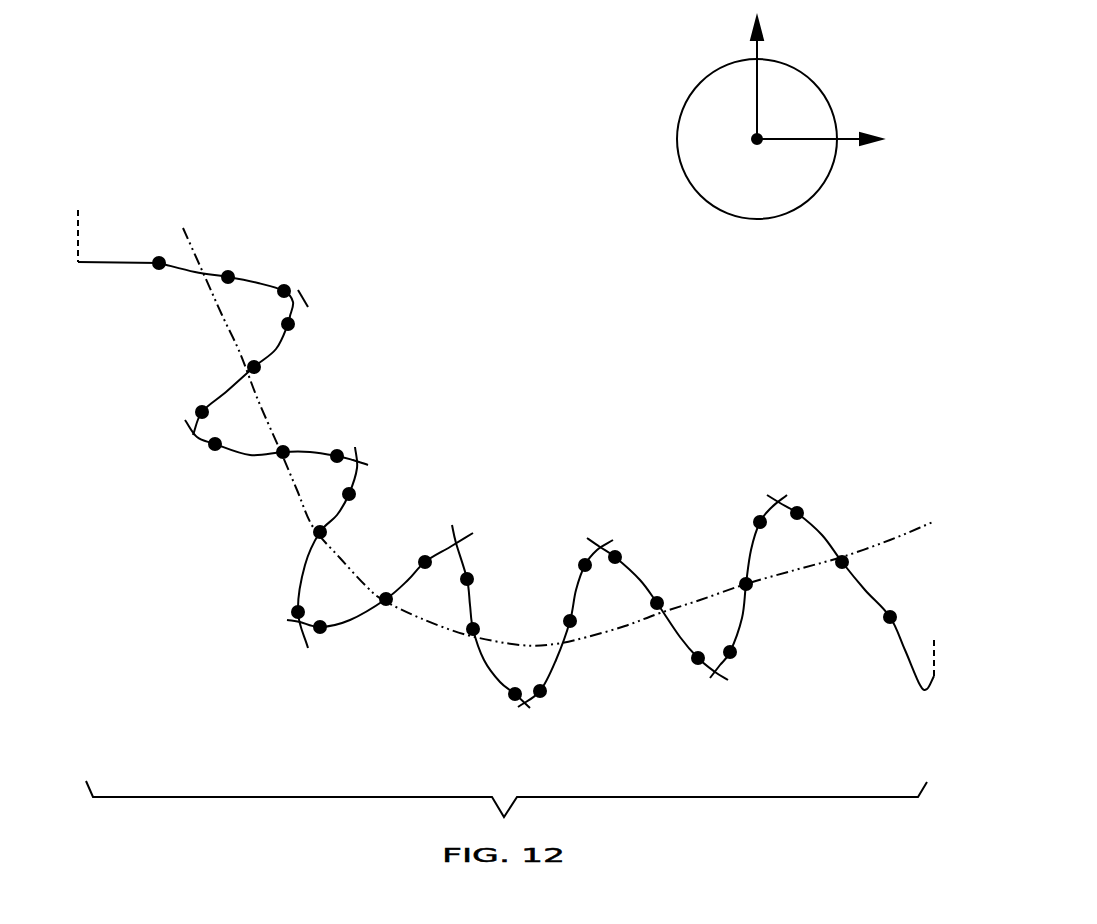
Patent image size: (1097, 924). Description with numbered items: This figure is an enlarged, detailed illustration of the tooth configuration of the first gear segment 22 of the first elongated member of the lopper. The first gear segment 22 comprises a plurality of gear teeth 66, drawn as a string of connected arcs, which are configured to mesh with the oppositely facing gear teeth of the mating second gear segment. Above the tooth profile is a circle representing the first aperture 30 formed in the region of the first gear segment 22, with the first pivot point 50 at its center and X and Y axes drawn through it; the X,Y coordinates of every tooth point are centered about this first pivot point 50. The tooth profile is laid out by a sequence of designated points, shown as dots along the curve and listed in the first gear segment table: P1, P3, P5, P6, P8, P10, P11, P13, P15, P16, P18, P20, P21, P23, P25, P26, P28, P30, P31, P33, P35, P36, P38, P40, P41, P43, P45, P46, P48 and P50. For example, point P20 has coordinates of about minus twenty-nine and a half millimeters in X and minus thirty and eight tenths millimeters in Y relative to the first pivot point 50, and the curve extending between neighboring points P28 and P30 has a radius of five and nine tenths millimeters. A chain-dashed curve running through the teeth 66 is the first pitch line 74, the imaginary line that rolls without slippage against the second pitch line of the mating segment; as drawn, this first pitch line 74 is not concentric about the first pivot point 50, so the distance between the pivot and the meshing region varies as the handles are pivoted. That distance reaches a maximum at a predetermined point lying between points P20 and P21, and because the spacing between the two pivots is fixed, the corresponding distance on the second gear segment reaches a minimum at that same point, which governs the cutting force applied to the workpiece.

The first gear segment 22 is at (508, 455).
The first aperture 30 is at (683, 107).
The first pivot point 50 is at (788, 180).
The gear teeth 66 is at (230, 388).
The first pitch line 74 is at (199, 252).
The point P1 is at (159, 263).
The point P3 is at (228, 277).
The point P5 is at (284, 291).
The point P6 is at (288, 324).
The point P8 is at (254, 367).
The point P10 is at (202, 412).
The point P11 is at (215, 444).
The point P13 is at (333, 427).
The point P15 is at (337, 456).
The point P16 is at (410, 508).
The point P18 is at (320, 532).
The point P20 is at (298, 612).
The point P21 is at (375, 657).
The point P23 is at (407, 572).
The point P25 is at (425, 562).
The point P26 is at (467, 579).
The point P28 is at (532, 603).
The point P30 is at (515, 694).
The point P31 is at (605, 708).
The point P33 is at (570, 621).
The point P35 is at (585, 565).
The point P36 is at (615, 557).
The point P38 is at (717, 580).
The point P40 is at (698, 658).
The point P41 is at (800, 668).
The point P43 is at (746, 584).
The point P45 is at (760, 522).
The point P46 is at (855, 488).
The point P48 is at (842, 562).
The point P50 is at (940, 593).